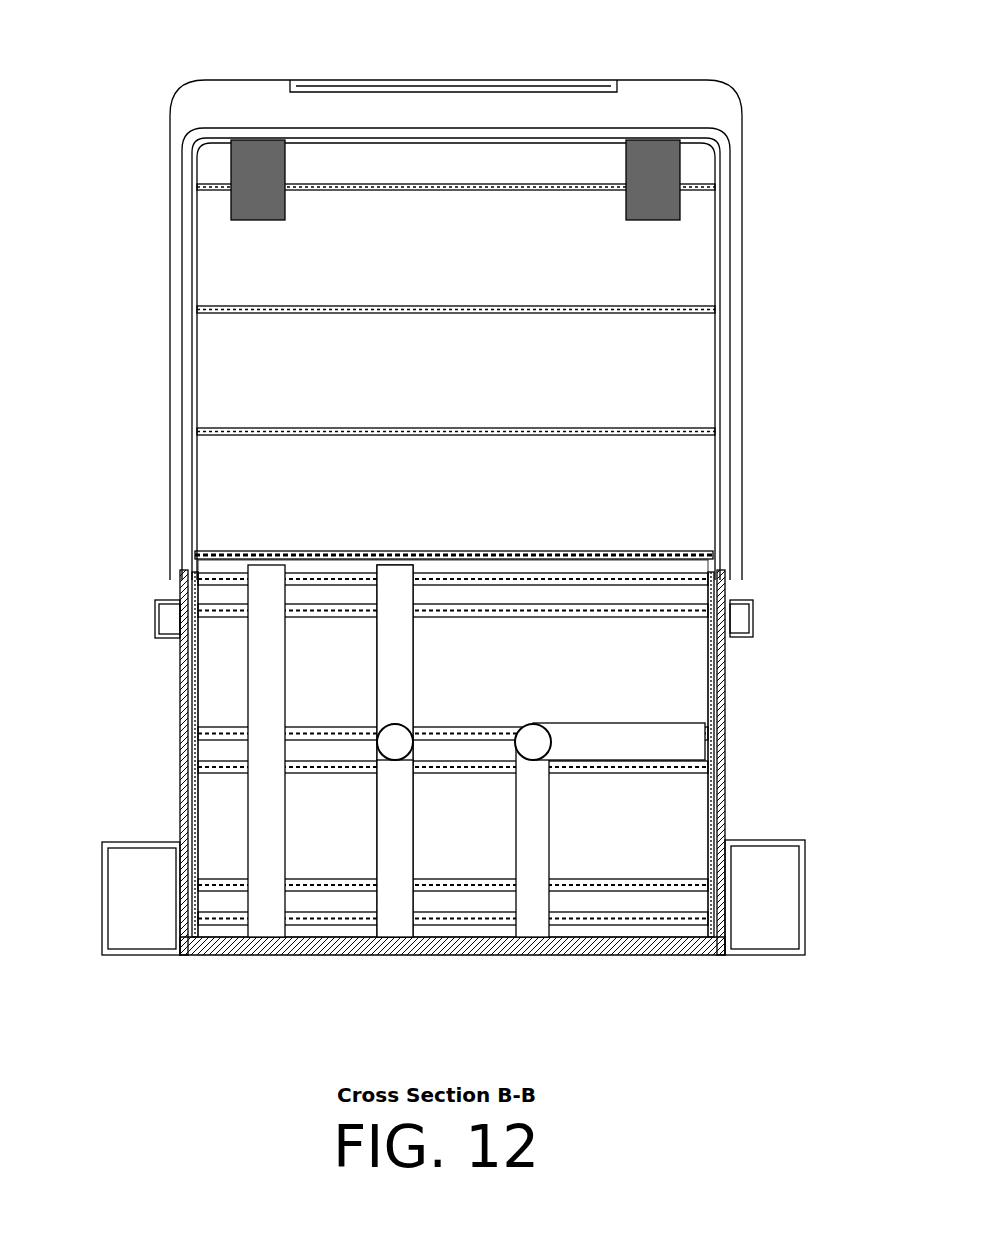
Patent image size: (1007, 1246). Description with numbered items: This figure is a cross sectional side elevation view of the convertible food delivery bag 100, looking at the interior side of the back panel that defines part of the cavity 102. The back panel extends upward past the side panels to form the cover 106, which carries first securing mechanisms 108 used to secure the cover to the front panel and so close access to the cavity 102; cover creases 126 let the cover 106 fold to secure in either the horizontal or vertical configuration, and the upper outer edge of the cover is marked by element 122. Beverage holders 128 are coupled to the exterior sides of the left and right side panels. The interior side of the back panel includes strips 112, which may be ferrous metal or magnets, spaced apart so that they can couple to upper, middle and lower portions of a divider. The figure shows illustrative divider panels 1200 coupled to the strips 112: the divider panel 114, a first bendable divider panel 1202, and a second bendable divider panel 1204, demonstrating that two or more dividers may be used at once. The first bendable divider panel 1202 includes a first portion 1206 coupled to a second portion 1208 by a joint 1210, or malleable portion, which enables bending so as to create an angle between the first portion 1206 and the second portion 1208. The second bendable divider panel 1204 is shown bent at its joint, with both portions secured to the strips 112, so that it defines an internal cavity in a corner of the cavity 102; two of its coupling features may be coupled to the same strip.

The convertible food delivery bag 100 is at (146, 524).
The cavity 102 is at (614, 637).
The cover 106 is at (690, 255).
The first securing mechanisms 108 is at (283, 160).
The strips 112 is at (492, 725).
The divider panel 114 is at (263, 918).
The outer frame / lid 122 is at (203, 77).
The cover creases 126 is at (452, 186).
The beverage holder 128 is at (147, 958).
The illustrative divider panels 1200 is at (287, 509).
The first bendable divider panel 1202 is at (395, 840).
The second bendable divider panel 1204 is at (537, 842).
The first portion 1206 is at (396, 914).
The second portion 1208 is at (395, 650).
The joint 1210 is at (392, 748).